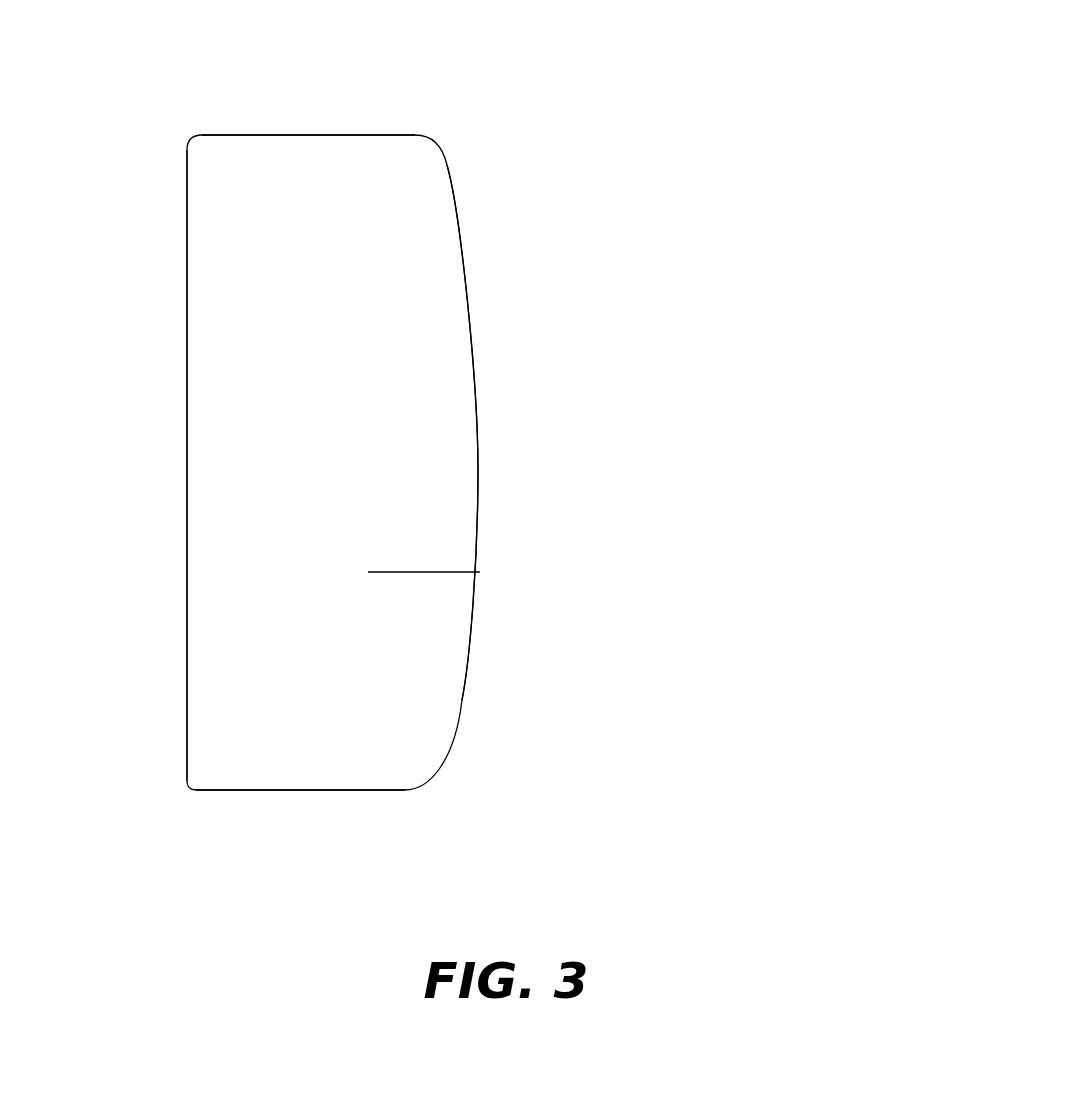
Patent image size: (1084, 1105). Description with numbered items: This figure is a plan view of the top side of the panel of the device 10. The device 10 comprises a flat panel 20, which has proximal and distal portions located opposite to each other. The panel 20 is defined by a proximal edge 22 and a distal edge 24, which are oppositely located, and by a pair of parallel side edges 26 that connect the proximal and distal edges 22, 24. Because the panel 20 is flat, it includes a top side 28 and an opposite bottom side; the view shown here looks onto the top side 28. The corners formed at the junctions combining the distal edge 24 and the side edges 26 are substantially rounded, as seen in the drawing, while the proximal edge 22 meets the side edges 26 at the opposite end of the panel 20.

The device 10 is at (725, 98).
The flat panel 20 is at (448, 160).
The proximal edge 22 is at (185, 463).
The distal edge 24 is at (478, 415).
The side edges 26 is at (298, 135).
The top side 28 is at (480, 572).